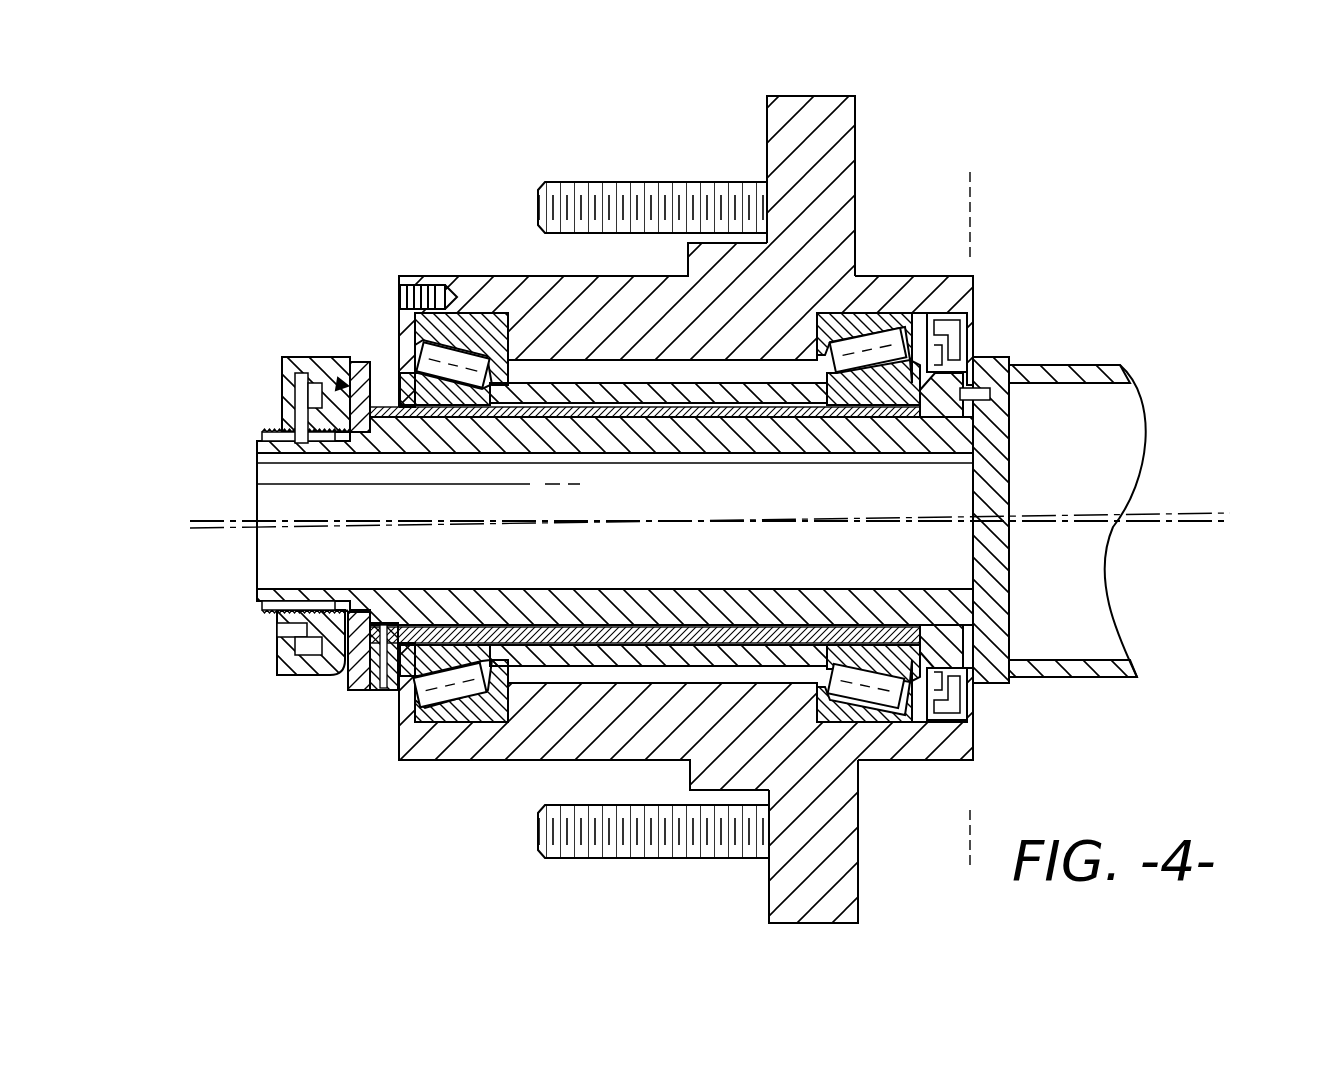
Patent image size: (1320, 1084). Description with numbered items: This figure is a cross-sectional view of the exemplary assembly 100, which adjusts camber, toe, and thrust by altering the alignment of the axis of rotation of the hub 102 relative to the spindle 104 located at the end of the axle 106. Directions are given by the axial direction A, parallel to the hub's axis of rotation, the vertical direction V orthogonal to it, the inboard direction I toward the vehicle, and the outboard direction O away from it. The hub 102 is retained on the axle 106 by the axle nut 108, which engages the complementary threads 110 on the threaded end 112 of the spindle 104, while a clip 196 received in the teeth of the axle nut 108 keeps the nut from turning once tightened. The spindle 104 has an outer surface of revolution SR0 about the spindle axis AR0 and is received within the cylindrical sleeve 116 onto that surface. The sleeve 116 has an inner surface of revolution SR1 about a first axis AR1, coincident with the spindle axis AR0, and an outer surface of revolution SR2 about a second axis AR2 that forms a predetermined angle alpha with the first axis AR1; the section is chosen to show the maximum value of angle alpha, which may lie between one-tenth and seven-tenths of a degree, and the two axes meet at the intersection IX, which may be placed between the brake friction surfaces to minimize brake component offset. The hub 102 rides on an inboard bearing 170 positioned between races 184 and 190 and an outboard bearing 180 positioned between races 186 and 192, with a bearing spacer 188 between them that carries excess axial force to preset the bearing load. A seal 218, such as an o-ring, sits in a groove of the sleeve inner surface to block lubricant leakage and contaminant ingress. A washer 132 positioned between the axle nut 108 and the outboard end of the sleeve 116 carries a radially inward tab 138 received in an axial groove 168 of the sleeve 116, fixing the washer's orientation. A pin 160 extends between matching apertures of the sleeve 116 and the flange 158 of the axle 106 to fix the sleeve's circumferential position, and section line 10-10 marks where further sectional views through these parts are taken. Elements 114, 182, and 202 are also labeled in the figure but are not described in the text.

The assembly 100 is at (300, 210).
The hub 102 is at (858, 146).
The spindle 104 is at (992, 618).
The axle 106 is at (1087, 366).
The axle nut 108 is at (318, 665).
The threads 110 is at (260, 440).
The threaded end 112 is at (258, 603).
The gear 114 is at (626, 182).
The sleeve 116 is at (858, 602).
The washer 132 is at (377, 373).
The tab 138 is at (380, 692).
The flange 158 is at (985, 704).
The pin 160 is at (988, 393).
The groove 168 is at (422, 640).
The inboard bearing 170 is at (452, 357).
The outboard bearing 180 is at (868, 328).
The wedge 182 is at (338, 382).
The race 184 is at (460, 672).
The race 186 is at (892, 690).
The bearing spacer 188 is at (547, 656).
The race 190 is at (484, 337).
The race 192 is at (848, 712).
The clip 196 is at (293, 405).
The seal 202 is at (972, 341).
The seal 218 is at (940, 420).
The section line 10 is at (969, 518).
The outer surface of revolution SR0 is at (714, 424).
The inner surface of revolution SR1 is at (595, 424).
The outer surface of revolution SR2 is at (882, 343).
The spindle axis AR0 is at (1168, 530).
The first axis AR1 is at (1183, 530).
The second axis AR2 is at (1166, 512).
The intersection IX is at (880, 516).
The angle alpha is at (1205, 521).
The vertical direction V is at (97, 278).
The axial direction A is at (490, 893).
The inboard direction I is at (1232, 155).
The outboard direction O is at (1105, 208).